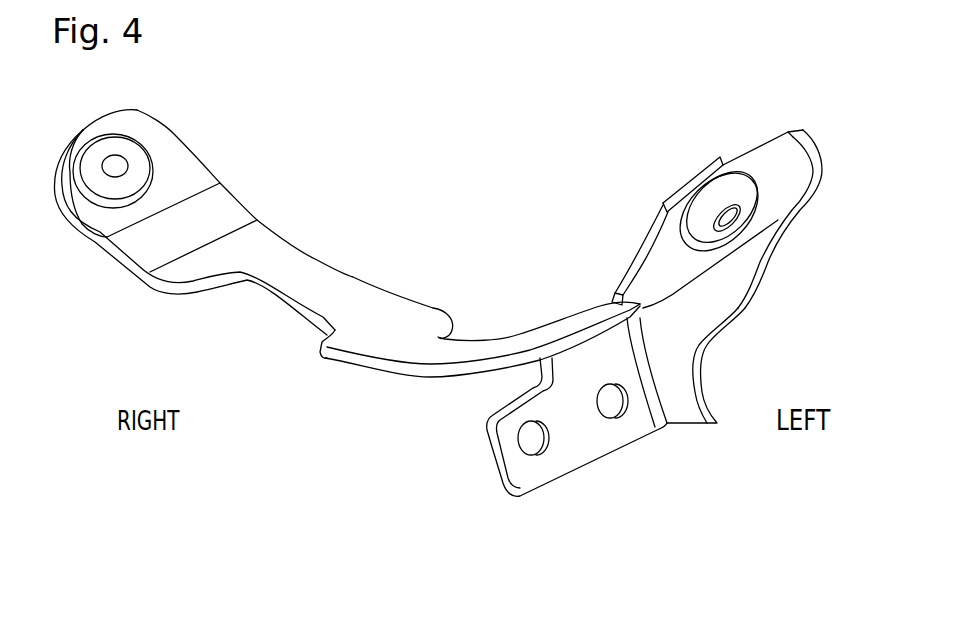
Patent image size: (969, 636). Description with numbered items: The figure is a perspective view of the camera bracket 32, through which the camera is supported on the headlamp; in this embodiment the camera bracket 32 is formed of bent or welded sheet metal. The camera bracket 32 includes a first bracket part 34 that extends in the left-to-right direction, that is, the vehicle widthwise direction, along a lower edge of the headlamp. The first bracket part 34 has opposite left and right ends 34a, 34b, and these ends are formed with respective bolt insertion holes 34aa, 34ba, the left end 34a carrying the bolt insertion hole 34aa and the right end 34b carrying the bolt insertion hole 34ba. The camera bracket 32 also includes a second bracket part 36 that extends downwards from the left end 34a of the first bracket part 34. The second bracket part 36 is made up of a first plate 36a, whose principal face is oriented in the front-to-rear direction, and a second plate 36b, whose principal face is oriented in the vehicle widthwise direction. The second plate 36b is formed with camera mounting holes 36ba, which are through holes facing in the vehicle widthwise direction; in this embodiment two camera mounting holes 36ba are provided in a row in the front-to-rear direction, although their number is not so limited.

The camera bracket 32 is at (200, 443).
The first bracket part 34 is at (362, 288).
The left end 34a is at (753, 153).
The bolt insertion hole 34aa is at (732, 217).
The right end 34b is at (177, 138).
The bolt insertion hole 34ba is at (111, 160).
The second bracket part 36 is at (616, 430).
The first plate 36a is at (693, 420).
The second plate 36b is at (640, 433).
The camera mounting holes 36ba is at (532, 455).